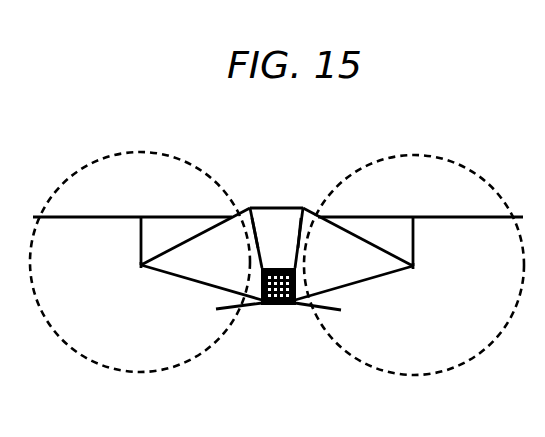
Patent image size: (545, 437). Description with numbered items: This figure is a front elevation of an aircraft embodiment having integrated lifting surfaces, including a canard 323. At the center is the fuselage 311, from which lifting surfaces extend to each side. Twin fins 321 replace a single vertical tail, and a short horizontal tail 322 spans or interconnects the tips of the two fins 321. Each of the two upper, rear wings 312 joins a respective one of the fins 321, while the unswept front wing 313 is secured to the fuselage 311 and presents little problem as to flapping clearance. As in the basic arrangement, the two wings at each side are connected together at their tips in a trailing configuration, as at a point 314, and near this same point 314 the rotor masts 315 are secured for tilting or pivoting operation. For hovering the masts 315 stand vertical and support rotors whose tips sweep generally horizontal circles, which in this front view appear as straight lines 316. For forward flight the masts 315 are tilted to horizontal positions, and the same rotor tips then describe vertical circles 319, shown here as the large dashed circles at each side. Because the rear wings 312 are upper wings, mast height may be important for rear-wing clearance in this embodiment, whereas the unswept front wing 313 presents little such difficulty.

The fuselage 311 is at (290, 306).
The upper, rear wing 312 is at (139, 246).
The unswept front wing 313 is at (187, 279).
The tip connection point 314 is at (141, 266).
The mast 315 is at (140, 229).
The horizontal circle of rotor tips 316 is at (158, 217).
The vertical circle of rotor tips 319 is at (350, 357).
The fin 321 is at (253, 236).
The horizontal tail 322 is at (279, 208).
The canard 323 is at (310, 309).